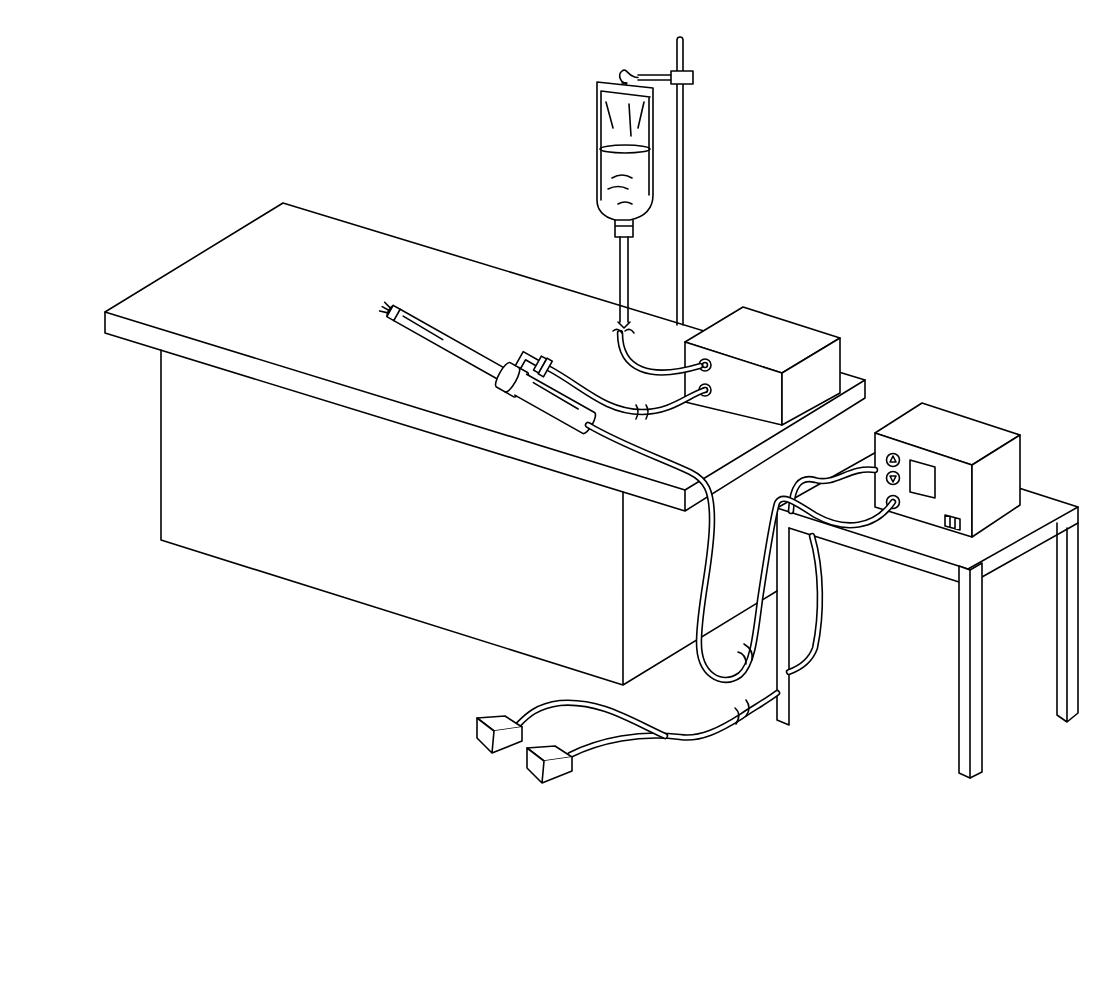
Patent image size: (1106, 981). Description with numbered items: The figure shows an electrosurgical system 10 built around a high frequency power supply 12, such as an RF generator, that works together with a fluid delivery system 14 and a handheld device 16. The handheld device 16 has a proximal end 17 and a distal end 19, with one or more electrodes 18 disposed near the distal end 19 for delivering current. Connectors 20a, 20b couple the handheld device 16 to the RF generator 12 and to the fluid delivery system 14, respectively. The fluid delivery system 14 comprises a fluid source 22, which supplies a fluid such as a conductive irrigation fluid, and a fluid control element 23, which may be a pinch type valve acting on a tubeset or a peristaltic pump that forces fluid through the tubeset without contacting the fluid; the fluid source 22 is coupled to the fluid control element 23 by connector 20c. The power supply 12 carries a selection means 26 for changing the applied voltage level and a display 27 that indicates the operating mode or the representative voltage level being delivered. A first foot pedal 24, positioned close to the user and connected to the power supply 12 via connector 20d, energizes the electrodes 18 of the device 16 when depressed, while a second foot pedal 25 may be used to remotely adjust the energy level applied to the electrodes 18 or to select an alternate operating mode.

The electrosurgical system 10 is at (997, 249).
The high frequency power supply 12 is at (917, 453).
The fluid delivery system 14 is at (711, 151).
The handheld device 16 is at (482, 390).
The proximal end 17 is at (557, 404).
The electrodes 18 is at (416, 326).
The distal end 19 is at (385, 308).
The connector 20a is at (703, 608).
The connector 20b is at (527, 353).
The connector 20c is at (620, 288).
The connector 20d is at (698, 742).
The fluid source 22 is at (578, 161).
The fluid control element 23 is at (770, 325).
The first foot pedal 24 is at (482, 753).
The second foot pedal 25 is at (563, 772).
The selection means 26 is at (885, 461).
The display 27 is at (934, 481).